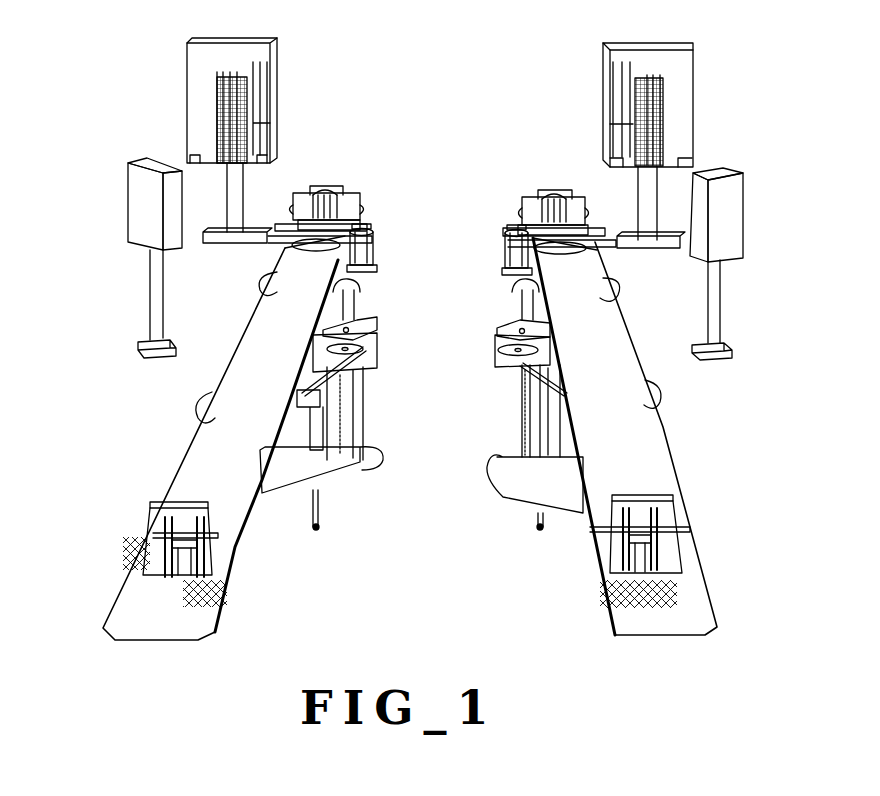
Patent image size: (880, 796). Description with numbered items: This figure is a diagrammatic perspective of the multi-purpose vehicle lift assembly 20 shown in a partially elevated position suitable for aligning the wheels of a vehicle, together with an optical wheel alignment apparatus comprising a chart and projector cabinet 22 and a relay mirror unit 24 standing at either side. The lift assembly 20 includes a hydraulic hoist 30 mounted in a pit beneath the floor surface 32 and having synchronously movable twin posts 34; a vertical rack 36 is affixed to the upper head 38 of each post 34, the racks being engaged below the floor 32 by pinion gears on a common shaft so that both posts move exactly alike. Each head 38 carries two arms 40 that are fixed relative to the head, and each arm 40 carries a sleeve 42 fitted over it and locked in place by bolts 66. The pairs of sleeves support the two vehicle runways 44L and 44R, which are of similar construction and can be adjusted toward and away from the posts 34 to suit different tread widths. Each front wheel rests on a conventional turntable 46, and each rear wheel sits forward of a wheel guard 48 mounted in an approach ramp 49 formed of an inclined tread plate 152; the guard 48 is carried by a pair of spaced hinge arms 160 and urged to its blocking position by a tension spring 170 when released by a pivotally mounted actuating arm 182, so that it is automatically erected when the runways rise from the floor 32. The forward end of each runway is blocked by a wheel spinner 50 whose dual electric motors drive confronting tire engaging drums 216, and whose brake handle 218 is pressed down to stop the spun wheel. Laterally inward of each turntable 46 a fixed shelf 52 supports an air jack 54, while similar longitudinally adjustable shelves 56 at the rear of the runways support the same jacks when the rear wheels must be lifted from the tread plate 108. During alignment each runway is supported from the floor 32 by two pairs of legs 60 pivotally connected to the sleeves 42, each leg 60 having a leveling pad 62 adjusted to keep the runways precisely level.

The multi-purpose vehicle lift assembly 20 is at (258, 657).
The chart and projector cabinet 22 is at (200, 40).
The relay mirror unit 24 is at (133, 200).
The hydraulic hoist 30 is at (432, 432).
The floor surface 32 is at (448, 467).
The posts or columns 34 is at (505, 404).
The vertical rack 36 is at (520, 426).
The upper head 38 is at (497, 350).
The arms 40 is at (500, 328).
The sleeve 42 is at (500, 306).
The left vehicle runway 44L is at (183, 436).
The right vehicle runway 44R is at (670, 437).
The turntable 46 is at (292, 240).
The wheel guard 48 is at (421, 539).
The approach ramp 49 is at (130, 547).
The wheel spinner 50 is at (437, 189).
The fixed shelf 52 is at (498, 266).
The air jack 54 is at (502, 237).
The shelves 56 is at (496, 482).
The legs 60 is at (340, 284).
The leveling pad 62 is at (312, 530).
The bolts 66 is at (320, 366).
The tread plate 108 is at (305, 323).
The inclined tread plate 152 is at (212, 618).
The hinge arms 160 is at (214, 527).
The tension spring 170 is at (175, 575).
The actuating arm 182 is at (210, 578).
The tire engaging drums 216 is at (326, 192).
The handle 218 is at (342, 188).